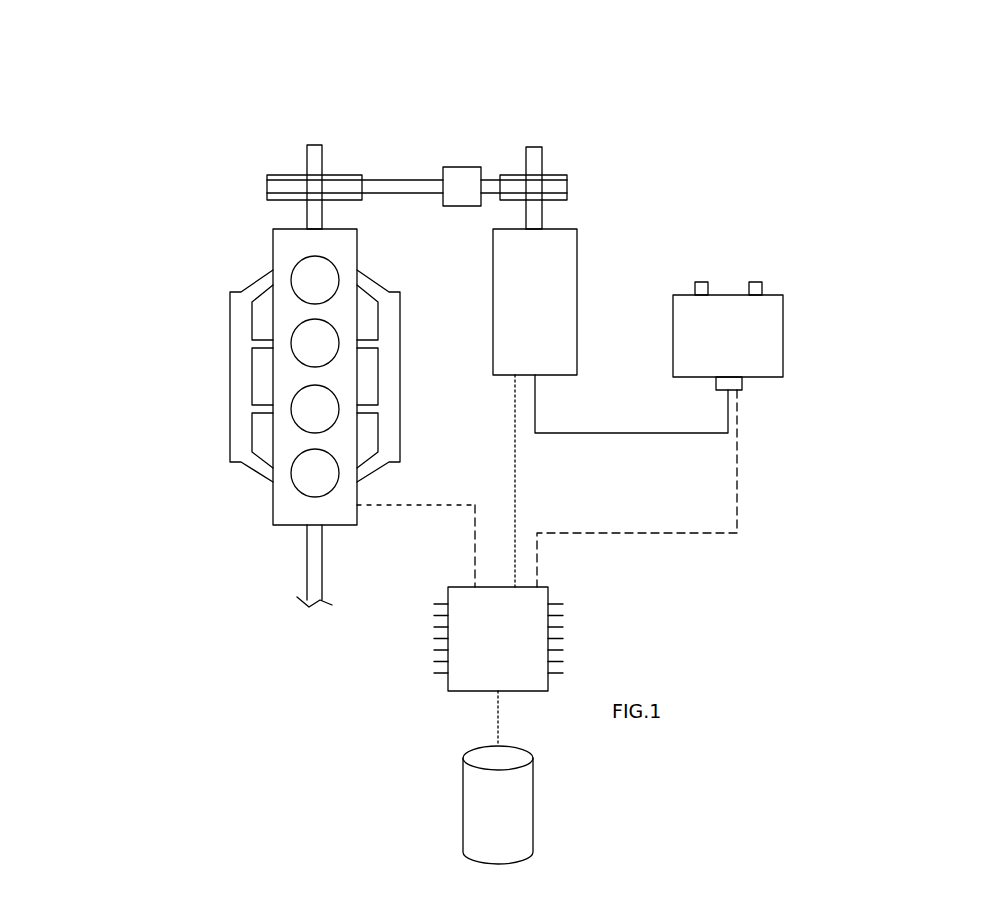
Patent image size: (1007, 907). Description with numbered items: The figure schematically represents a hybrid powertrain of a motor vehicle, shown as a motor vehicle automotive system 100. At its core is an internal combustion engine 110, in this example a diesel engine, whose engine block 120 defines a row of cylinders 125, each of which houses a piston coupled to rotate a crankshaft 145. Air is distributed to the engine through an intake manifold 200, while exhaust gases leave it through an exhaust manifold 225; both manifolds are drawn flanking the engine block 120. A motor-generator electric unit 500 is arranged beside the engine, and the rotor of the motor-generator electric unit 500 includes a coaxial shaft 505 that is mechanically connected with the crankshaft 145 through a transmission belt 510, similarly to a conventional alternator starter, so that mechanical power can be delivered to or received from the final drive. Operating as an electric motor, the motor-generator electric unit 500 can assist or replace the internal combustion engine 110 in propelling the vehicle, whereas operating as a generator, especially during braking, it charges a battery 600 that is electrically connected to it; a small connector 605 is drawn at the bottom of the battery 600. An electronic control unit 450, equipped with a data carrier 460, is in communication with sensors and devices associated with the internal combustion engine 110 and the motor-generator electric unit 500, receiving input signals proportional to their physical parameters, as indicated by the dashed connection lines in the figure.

The motor vehicle automotive system 100 is at (574, 96).
The internal combustion engine 110 is at (276, 539).
The engine block 120 is at (345, 248).
The cylinder 125 is at (320, 408).
The crankshaft 145 is at (317, 572).
The intake manifold 200 is at (238, 408).
The exhaust manifold 225 is at (383, 362).
The electronic control unit 450 is at (513, 663).
The data carrier 460 is at (505, 803).
The motor-generator electric unit 500 is at (555, 287).
The coaxial shaft 505 is at (540, 163).
The transmission belt 510 is at (467, 167).
The battery 600 is at (688, 338).
The battery sensor 605 is at (725, 383).